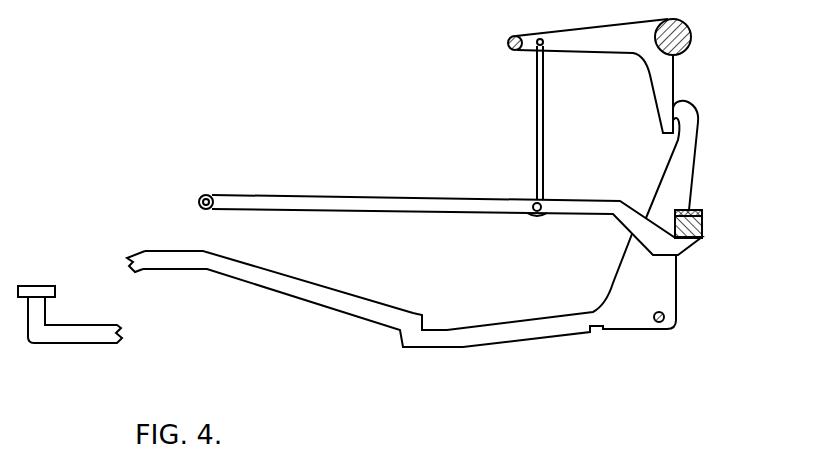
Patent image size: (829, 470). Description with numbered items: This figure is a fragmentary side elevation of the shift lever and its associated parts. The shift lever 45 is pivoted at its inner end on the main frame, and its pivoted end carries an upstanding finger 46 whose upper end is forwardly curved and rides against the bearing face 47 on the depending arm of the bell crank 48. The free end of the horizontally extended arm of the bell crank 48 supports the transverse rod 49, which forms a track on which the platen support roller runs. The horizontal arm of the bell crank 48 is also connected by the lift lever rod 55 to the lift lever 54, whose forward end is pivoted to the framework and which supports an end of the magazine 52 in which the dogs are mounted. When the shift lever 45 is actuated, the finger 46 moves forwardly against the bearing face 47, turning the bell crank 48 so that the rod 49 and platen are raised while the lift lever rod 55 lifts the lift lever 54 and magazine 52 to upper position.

The shift lever 45 is at (400, 295).
The upstanding finger 46 is at (660, 190).
The bearing face 47 is at (686, 78).
The bell crank 48 is at (640, 59).
The transverse rod 49 is at (516, 31).
The magazine 52 is at (704, 225).
The lift lever 54 is at (460, 198).
The lift lever rod 55 is at (534, 128).